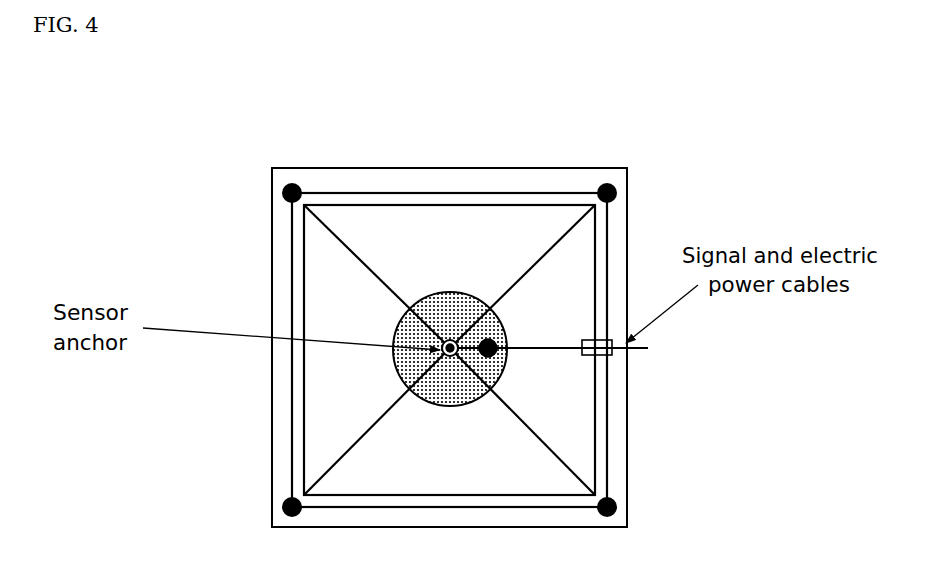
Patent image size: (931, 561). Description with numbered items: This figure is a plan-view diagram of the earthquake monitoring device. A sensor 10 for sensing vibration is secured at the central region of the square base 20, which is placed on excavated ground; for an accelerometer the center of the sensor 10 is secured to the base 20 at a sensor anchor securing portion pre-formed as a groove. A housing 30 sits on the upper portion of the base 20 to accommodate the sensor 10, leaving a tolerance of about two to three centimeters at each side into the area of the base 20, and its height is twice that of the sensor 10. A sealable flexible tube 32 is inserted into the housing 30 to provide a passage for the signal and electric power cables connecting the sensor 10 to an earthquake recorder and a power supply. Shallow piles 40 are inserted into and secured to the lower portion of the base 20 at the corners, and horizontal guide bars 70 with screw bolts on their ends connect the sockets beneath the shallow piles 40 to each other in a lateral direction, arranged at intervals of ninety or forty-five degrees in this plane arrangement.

The sensor 10 is at (432, 289).
The base 20 is at (538, 170).
The housing 30 is at (368, 199).
The sealable flexible tube 32 is at (609, 357).
The shallow piles 40 is at (596, 196).
The guide bars 70 is at (546, 450).